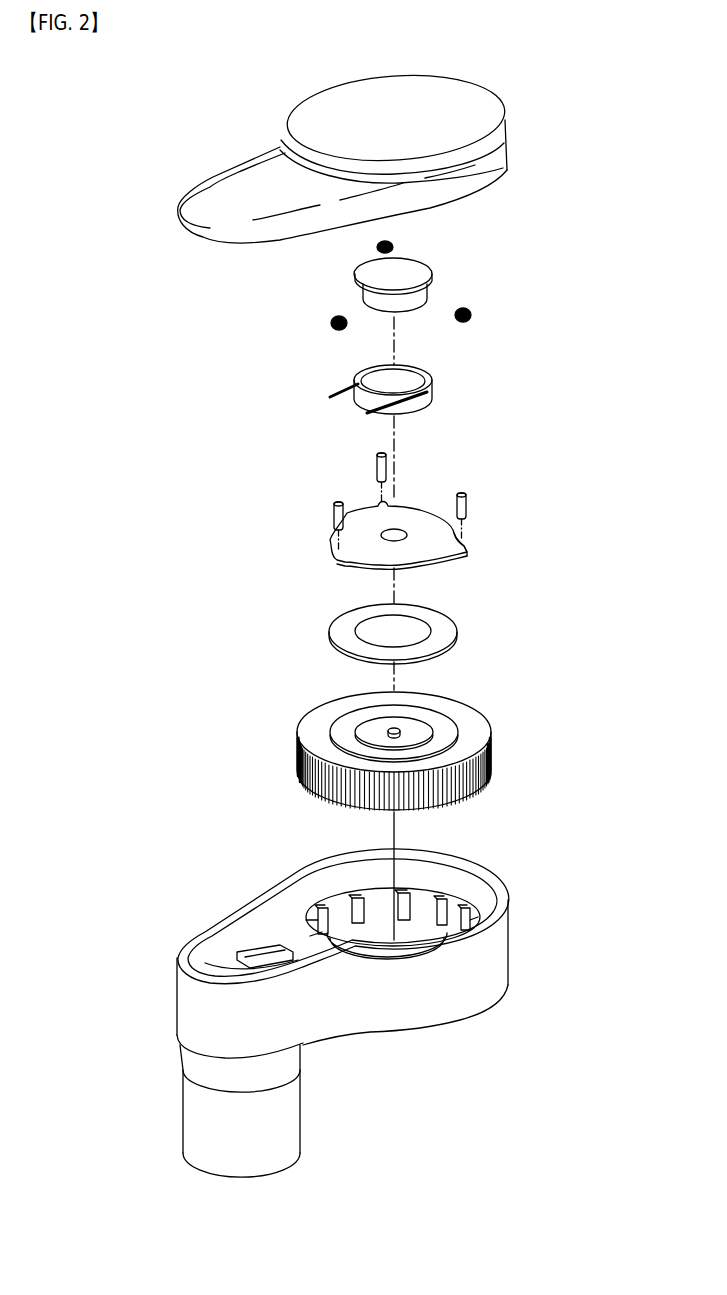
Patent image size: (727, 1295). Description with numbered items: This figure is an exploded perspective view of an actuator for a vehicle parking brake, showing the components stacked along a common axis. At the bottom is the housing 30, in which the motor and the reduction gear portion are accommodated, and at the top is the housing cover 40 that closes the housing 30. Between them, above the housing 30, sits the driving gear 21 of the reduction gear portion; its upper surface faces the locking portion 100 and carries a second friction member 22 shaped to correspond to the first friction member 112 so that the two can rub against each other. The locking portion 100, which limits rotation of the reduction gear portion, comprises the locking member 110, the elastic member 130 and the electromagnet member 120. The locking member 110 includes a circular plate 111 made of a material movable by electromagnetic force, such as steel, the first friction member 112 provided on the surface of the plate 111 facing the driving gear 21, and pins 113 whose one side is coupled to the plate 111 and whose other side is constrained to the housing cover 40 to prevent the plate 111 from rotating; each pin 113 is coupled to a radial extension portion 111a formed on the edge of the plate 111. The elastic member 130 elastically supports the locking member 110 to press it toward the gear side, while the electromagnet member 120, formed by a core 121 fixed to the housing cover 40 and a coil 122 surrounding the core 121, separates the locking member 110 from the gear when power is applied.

The driving gear 21 is at (477, 743).
The second friction member 22 is at (447, 723).
The housing 30 is at (187, 993).
The housing cover 40 is at (204, 186).
The locking portion 100 is at (602, 233).
The locking member 110 is at (540, 497).
The plate 111 is at (423, 555).
The extension portion 111a is at (467, 547).
The first friction member 112 is at (447, 632).
The pin 113 is at (466, 497).
The electromagnet member 120 is at (545, 295).
The core 121 is at (427, 292).
The coil 122 is at (433, 392).
The elastic member 130 is at (330, 323).